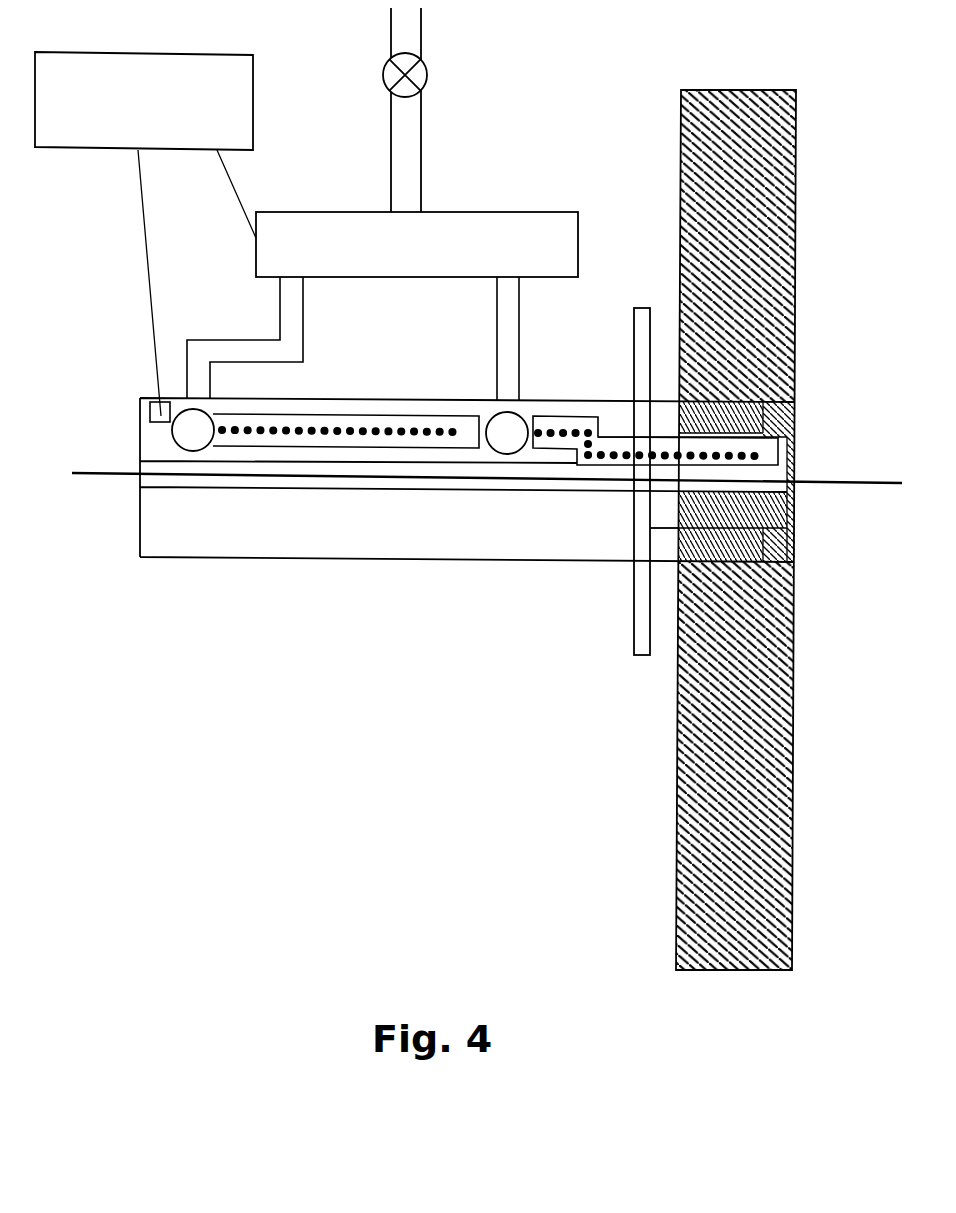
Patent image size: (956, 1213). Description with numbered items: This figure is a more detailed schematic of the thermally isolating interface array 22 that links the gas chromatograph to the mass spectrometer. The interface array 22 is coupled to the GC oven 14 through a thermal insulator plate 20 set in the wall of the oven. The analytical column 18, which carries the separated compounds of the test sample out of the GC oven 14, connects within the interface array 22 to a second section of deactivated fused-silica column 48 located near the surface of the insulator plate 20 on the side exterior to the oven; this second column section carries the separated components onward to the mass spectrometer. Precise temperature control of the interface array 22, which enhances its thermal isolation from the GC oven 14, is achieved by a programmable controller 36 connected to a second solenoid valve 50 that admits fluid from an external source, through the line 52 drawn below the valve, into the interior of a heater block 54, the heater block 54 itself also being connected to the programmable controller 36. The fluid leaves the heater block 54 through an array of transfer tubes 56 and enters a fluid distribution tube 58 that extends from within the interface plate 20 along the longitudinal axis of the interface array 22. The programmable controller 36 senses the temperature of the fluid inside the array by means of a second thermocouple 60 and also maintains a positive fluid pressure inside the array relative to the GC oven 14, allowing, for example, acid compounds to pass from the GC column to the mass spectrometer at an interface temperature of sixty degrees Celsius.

The GC oven 14 is at (792, 120).
The analytical column 18 is at (843, 483).
The thermal insulator plate 20 is at (788, 518).
The interface array 22 is at (535, 563).
The programmable controller 36 is at (187, 63).
The second section of deactivated fused-silica column 48 is at (227, 475).
The second solenoid valve 50 is at (425, 63).
The supply line 52 is at (413, 155).
The heater block 54 is at (478, 218).
The array of transfer tubes 56 is at (292, 330).
The fluid distribution tube 58 is at (395, 441).
The second thermocouple 60 is at (152, 403).